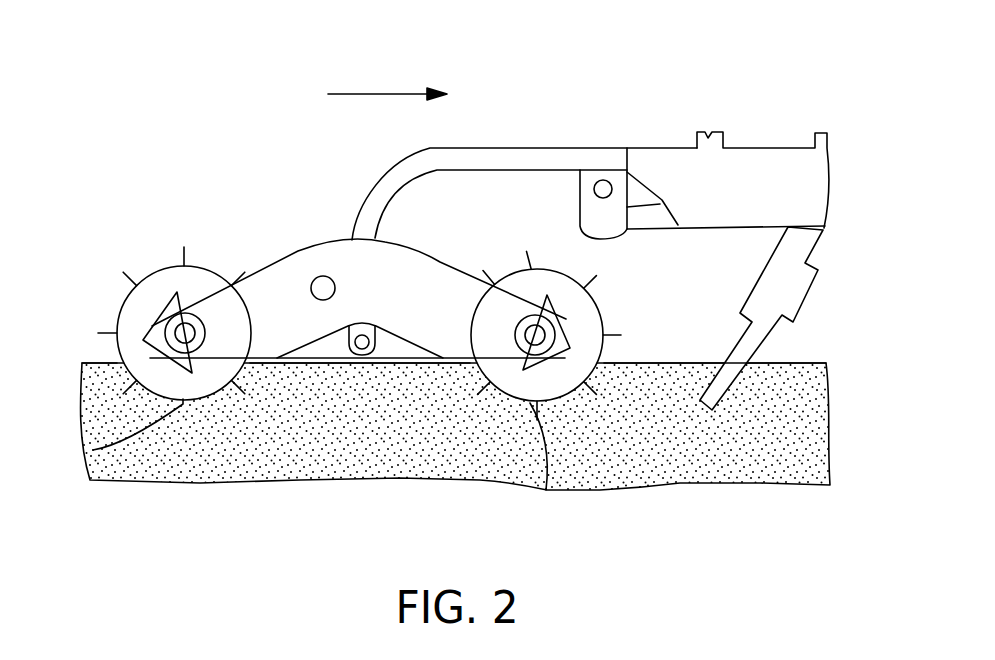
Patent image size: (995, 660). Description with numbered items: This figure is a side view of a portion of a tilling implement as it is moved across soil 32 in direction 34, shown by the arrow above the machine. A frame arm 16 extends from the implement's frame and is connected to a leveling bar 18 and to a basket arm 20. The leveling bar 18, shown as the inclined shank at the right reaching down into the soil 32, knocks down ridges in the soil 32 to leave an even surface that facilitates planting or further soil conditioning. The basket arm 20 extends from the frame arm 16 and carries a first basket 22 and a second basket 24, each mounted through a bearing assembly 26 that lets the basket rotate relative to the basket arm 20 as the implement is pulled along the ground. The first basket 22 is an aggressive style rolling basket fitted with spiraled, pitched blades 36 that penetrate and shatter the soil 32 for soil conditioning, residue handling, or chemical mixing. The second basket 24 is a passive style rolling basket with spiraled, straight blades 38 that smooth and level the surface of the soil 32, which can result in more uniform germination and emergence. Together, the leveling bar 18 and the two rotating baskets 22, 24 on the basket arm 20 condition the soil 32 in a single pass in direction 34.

The frame arm 16 is at (497, 157).
The leveling bar 18 is at (730, 383).
The basket arm 20 is at (280, 288).
The first basket 22 is at (520, 265).
The second basket 24 is at (157, 287).
The bearing assembly 26 is at (170, 326).
The soil 32 is at (445, 440).
The direction 34 is at (381, 93).
The pitched blades 36 is at (546, 490).
The straight blades 38 is at (93, 451).